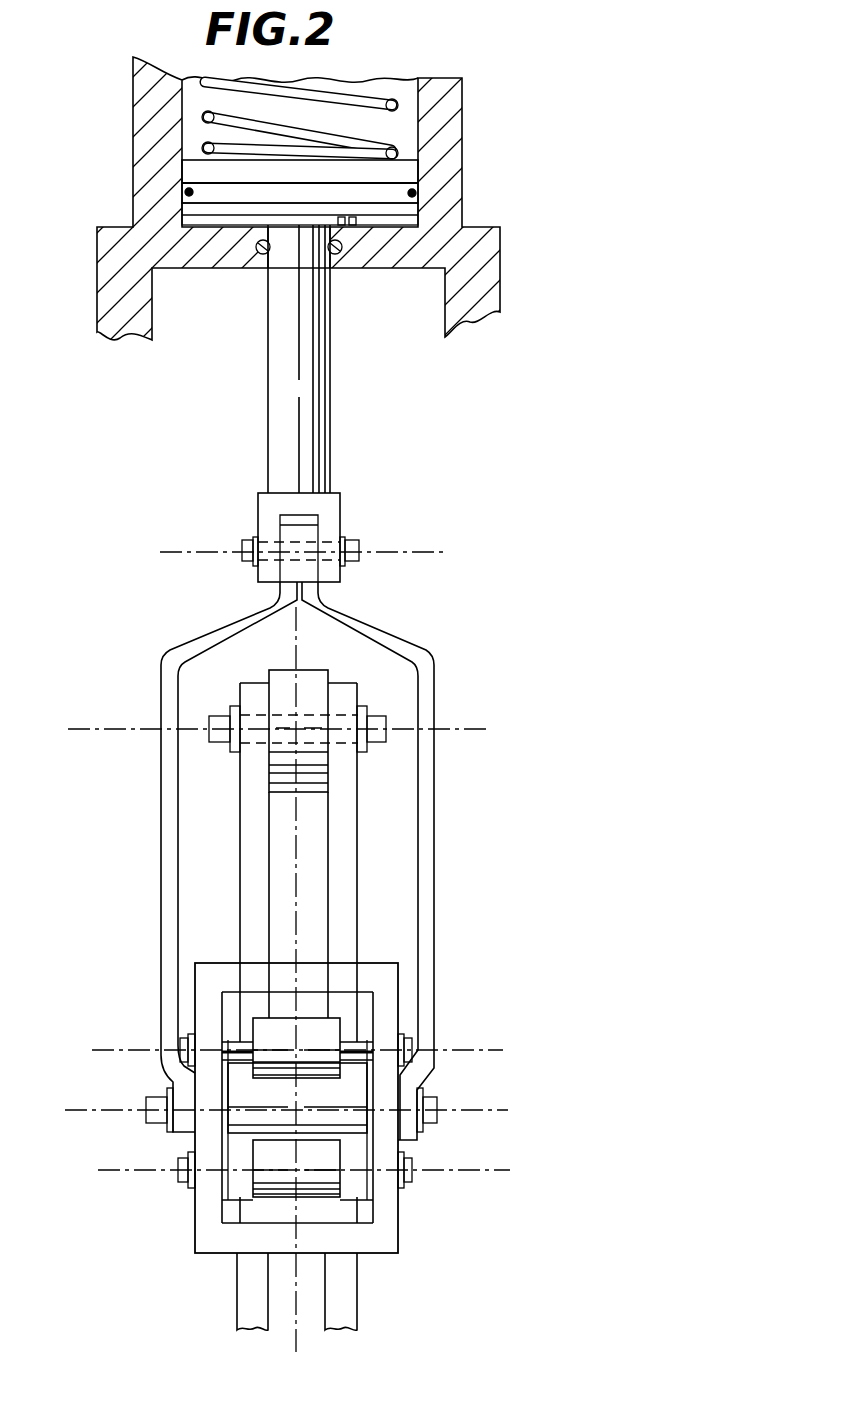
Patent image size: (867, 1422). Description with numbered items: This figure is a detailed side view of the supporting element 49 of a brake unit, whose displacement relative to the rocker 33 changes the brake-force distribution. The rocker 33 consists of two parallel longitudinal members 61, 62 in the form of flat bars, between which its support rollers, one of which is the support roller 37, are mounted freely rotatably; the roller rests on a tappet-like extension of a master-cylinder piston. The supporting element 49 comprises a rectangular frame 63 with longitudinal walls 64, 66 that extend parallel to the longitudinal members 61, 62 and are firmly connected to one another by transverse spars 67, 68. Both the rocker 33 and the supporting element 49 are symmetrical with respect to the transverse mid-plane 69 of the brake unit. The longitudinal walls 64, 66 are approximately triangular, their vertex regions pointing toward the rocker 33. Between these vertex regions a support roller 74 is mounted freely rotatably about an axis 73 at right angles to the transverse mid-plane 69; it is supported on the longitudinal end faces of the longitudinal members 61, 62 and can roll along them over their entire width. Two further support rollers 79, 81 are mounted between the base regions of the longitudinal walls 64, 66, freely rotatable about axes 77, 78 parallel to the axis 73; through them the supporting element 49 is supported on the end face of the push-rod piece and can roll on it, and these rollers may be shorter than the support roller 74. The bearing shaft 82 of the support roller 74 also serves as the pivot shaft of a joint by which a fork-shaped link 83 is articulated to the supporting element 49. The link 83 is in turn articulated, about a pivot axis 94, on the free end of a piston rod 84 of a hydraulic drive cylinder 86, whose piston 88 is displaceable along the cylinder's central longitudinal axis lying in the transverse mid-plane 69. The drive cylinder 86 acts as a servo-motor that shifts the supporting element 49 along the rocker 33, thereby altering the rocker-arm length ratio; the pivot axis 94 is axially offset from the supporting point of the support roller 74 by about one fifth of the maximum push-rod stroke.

The hydraulic drive cylinder 86 is at (463, 158).
The piston 88 is at (407, 172).
The piston rod 84 is at (321, 395).
The pivot axis 94 is at (373, 552).
The link 83 is at (437, 715).
The support roller 37 is at (318, 742).
The longitudinal member 61 is at (248, 827).
The longitudinal member 62 is at (362, 822).
The transverse mid-plane 69 is at (296, 858).
The transverse spar 67 is at (315, 970).
The supporting element 49 is at (314, 1091).
The support roller 79 is at (265, 1035).
The axis 77 is at (473, 1050).
The bearing shaft 82 is at (155, 1100).
The axis 73 is at (470, 1110).
The support roller 74 is at (252, 1100).
The axis 78 is at (462, 1170).
The longitudinal wall 64 is at (203, 1205).
The support roller 81 is at (327, 1175).
The longitudinal wall 66 is at (388, 1225).
The transverse spar 68 is at (350, 1245).
The rocker 33 is at (237, 1278).
The frame 63 is at (305, 1240).